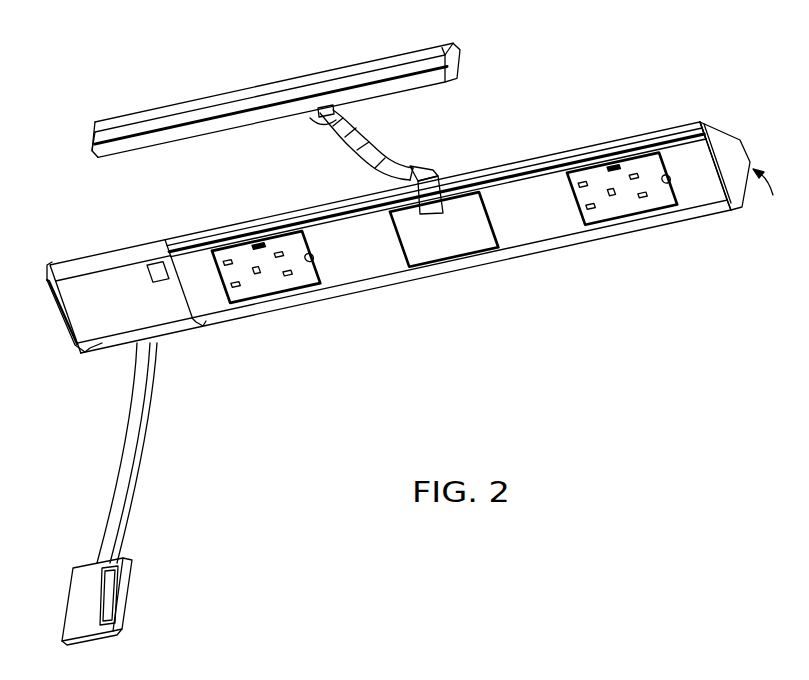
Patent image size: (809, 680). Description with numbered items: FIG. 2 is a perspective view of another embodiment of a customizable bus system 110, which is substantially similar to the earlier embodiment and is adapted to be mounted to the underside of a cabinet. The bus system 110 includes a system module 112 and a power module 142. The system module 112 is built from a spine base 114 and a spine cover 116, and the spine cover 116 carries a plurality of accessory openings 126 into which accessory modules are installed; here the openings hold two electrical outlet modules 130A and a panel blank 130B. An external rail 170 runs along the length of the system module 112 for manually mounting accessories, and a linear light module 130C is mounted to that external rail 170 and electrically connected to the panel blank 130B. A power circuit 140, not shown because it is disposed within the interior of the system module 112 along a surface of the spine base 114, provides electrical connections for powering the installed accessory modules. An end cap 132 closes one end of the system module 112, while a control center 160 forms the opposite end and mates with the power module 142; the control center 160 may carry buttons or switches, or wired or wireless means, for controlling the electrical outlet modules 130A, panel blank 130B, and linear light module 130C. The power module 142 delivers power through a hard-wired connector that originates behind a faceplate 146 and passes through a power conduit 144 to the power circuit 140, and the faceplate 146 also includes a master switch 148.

The bus system 110 is at (54, 122).
The system module 112 is at (372, 297).
The spine base 114 is at (712, 120).
The spine cover 116 is at (687, 188).
The accessory openings 126 is at (304, 256).
The electrical outlet modules 130A is at (275, 288).
The panel blank 130B is at (470, 238).
The linear light module 130C is at (373, 70).
The end cap 132 is at (717, 143).
The power circuit 140 is at (769, 194).
The power module 142 is at (105, 412).
The power conduit 144 is at (123, 465).
The faceplate 146 is at (85, 592).
The master switch 148 is at (113, 622).
The control center 160 is at (87, 262).
The external rail 170 is at (541, 163).